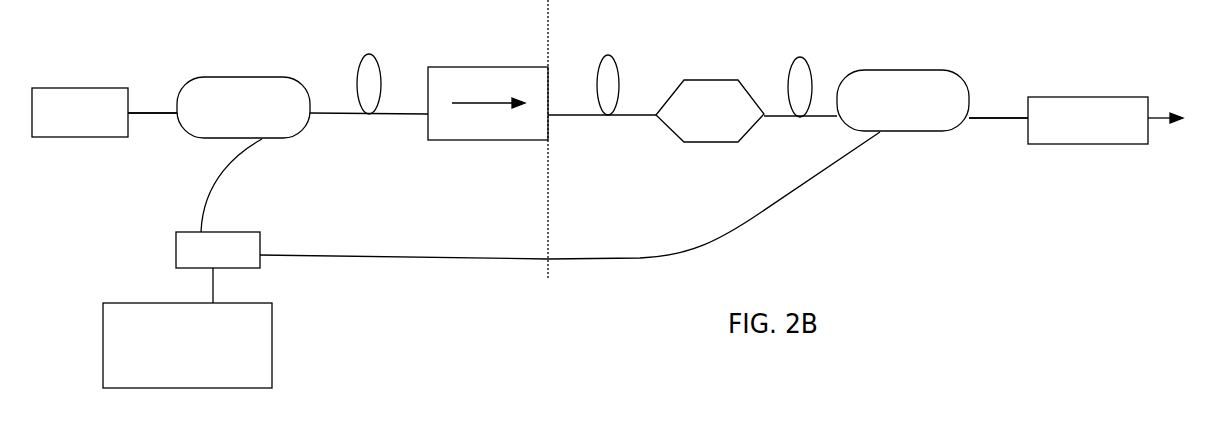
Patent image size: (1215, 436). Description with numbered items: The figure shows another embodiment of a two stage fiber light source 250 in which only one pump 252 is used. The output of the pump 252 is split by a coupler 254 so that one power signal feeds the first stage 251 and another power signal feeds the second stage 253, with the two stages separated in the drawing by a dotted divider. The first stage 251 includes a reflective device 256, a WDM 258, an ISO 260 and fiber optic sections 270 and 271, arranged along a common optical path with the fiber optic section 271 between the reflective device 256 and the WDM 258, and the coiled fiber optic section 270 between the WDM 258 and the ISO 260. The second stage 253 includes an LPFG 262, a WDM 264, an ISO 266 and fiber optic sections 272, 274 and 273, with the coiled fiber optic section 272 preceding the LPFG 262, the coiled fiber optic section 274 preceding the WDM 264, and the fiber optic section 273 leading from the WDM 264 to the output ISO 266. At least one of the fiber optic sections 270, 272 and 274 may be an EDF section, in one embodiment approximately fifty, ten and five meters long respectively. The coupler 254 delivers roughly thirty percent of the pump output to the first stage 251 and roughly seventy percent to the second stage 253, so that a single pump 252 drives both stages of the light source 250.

The two stage fiber light source 250 is at (975, 219).
The first stage 251 is at (422, 156).
The pump 252 is at (242, 370).
The second stage 253 is at (663, 158).
The pump coupler / splitter 254 is at (228, 260).
The reflective device 256 is at (107, 130).
The WDM 258 is at (277, 132).
The ISO 260 is at (530, 130).
The LPFG 262 is at (718, 132).
The WDM 264 is at (938, 122).
The ISO 266 is at (1130, 134).
The fiber optic section 270 is at (369, 55).
The fiber optic section 271 is at (141, 112).
The fiber optic section 272 is at (618, 66).
The fiber optic section 273 is at (991, 118).
The fiber optic section 274 is at (811, 70).